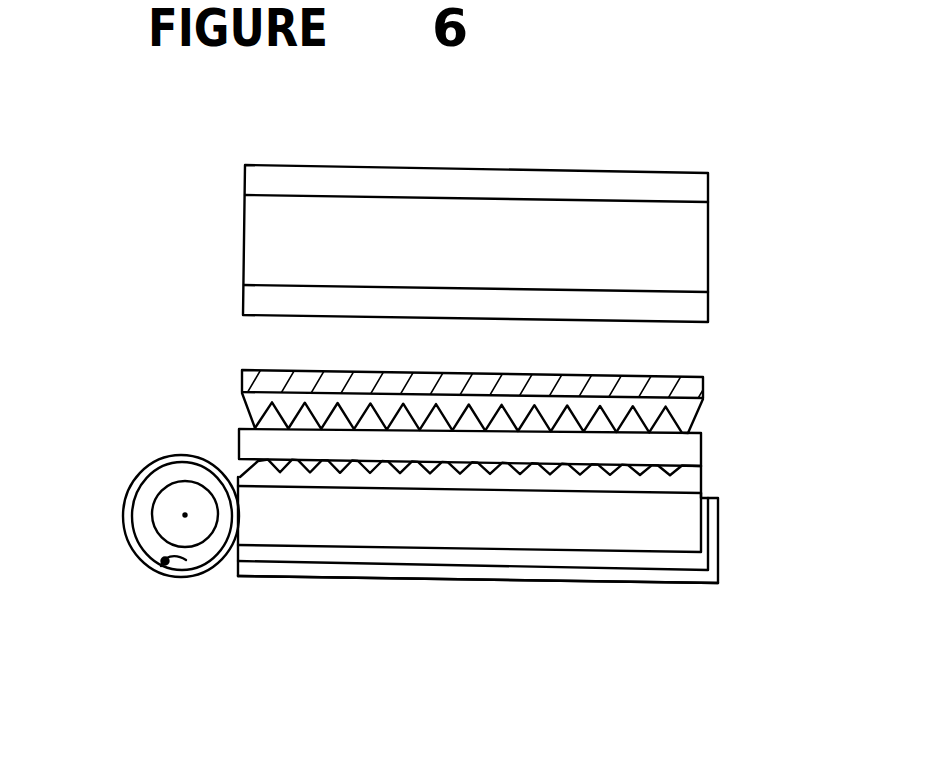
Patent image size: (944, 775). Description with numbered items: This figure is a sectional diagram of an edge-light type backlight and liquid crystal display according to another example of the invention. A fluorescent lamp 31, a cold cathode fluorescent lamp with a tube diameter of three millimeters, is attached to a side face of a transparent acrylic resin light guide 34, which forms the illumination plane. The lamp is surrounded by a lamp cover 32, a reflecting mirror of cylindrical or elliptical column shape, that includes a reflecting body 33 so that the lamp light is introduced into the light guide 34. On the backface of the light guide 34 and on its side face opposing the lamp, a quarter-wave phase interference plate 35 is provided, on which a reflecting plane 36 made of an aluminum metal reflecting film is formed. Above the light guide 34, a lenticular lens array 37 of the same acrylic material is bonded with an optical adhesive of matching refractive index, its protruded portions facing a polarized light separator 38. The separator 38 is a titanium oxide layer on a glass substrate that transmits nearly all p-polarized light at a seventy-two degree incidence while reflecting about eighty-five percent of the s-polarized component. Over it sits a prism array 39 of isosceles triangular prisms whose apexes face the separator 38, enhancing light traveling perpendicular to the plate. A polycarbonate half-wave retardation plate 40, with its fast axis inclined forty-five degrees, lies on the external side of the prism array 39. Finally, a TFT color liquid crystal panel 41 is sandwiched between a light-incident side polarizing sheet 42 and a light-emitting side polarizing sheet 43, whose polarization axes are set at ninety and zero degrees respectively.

The fluorescent lamp 31 is at (185, 525).
The lamp cover 32 is at (137, 467).
The reflecting body 33 is at (185, 570).
The light guide 34 is at (678, 523).
The λ/4 phase interference plate 35 is at (650, 558).
The reflecting plane 36 is at (322, 567).
The lenticular lens array 37 is at (685, 484).
The polarized light separator 38 is at (250, 440).
The prism array 39 is at (685, 413).
The λ/2 retardation plate 40 is at (242, 382).
The liquid crystal panel 41 is at (236, 239).
The light-incident side polarizing sheet 42 is at (692, 308).
The light-emitting side polarizing sheet 43 is at (692, 188).